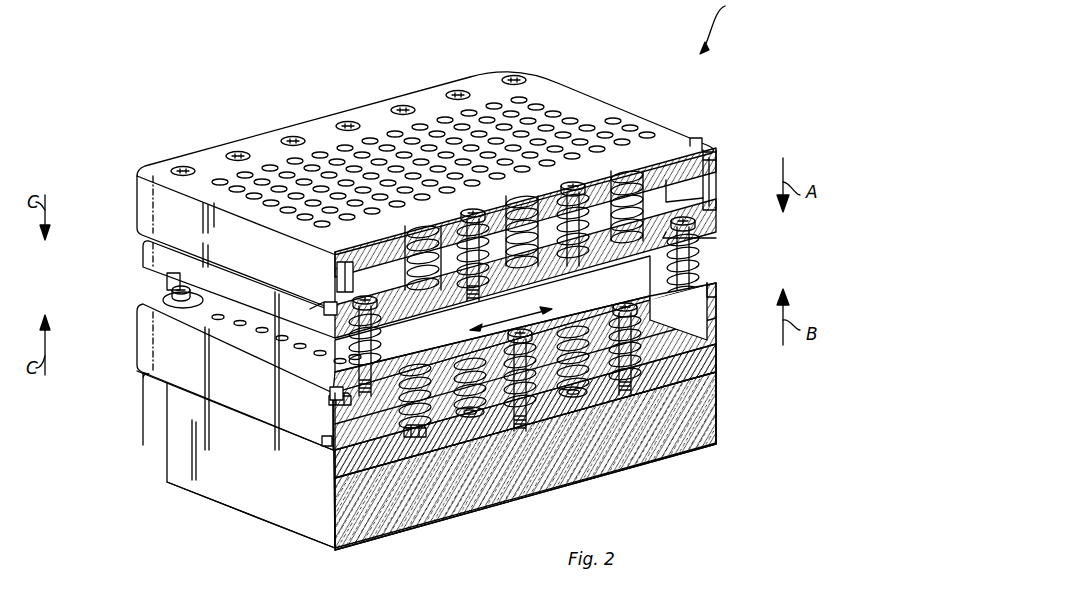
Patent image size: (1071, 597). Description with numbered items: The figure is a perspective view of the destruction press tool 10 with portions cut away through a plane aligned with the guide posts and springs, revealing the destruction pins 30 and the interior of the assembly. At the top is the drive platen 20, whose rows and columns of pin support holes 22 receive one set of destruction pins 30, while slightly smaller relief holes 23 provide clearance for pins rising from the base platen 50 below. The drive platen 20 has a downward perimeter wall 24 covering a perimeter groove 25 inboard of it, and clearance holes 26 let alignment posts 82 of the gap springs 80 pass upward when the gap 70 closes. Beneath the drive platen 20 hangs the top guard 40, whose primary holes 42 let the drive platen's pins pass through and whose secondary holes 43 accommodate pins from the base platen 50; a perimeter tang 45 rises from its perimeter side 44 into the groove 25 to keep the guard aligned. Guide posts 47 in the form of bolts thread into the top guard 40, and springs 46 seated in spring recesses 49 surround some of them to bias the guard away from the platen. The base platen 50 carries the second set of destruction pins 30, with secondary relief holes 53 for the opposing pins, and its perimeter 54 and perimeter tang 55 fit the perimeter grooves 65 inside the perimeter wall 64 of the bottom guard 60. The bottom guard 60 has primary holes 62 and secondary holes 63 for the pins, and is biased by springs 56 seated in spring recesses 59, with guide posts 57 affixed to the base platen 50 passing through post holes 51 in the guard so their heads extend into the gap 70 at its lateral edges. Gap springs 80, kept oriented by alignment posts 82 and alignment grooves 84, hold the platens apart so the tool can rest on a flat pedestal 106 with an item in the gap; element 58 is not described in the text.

The destruction press tool 10 is at (444, 275).
The drive platen 20 is at (143, 198).
The pin support holes 22 is at (320, 150).
The relief holes 23 is at (330, 153).
The perimeter wall 24 is at (717, 188).
The perimeter groove 25 is at (717, 162).
The clearance holes 26 is at (692, 147).
The destruction pins 30 is at (408, 236).
The top guard 40 is at (146, 258).
The primary holes 42 is at (380, 270).
The secondary holes 43 is at (349, 262).
The perimeter side 44 is at (228, 296).
The perimeter tang 45 is at (324, 306).
The springs 46 is at (509, 208).
The guide posts 47 is at (478, 216).
The spring recesses 49 is at (612, 200).
The base platen 50 is at (160, 430).
The post holes 51 is at (608, 304).
The secondary relief holes 53 is at (395, 480).
The perimeter 54 is at (215, 429).
The perimeter tang 55 is at (324, 441).
The springs 56 is at (560, 430).
The guide posts 57 is at (710, 379).
The bolt 58 is at (683, 425).
The spring recesses 59 is at (455, 440).
The bottom guard 60 is at (148, 342).
The primary holes 62 is at (265, 333).
The secondary holes 63 is at (237, 326).
The perimeter wall 64 is at (186, 362).
The perimeter grooves 65 is at (330, 390).
The gap 70 is at (172, 292).
The gap springs 80 is at (168, 304).
The alignment posts 82 is at (164, 297).
The alignment grooves 84 is at (350, 357).
The flat pedestal 106 is at (180, 470).